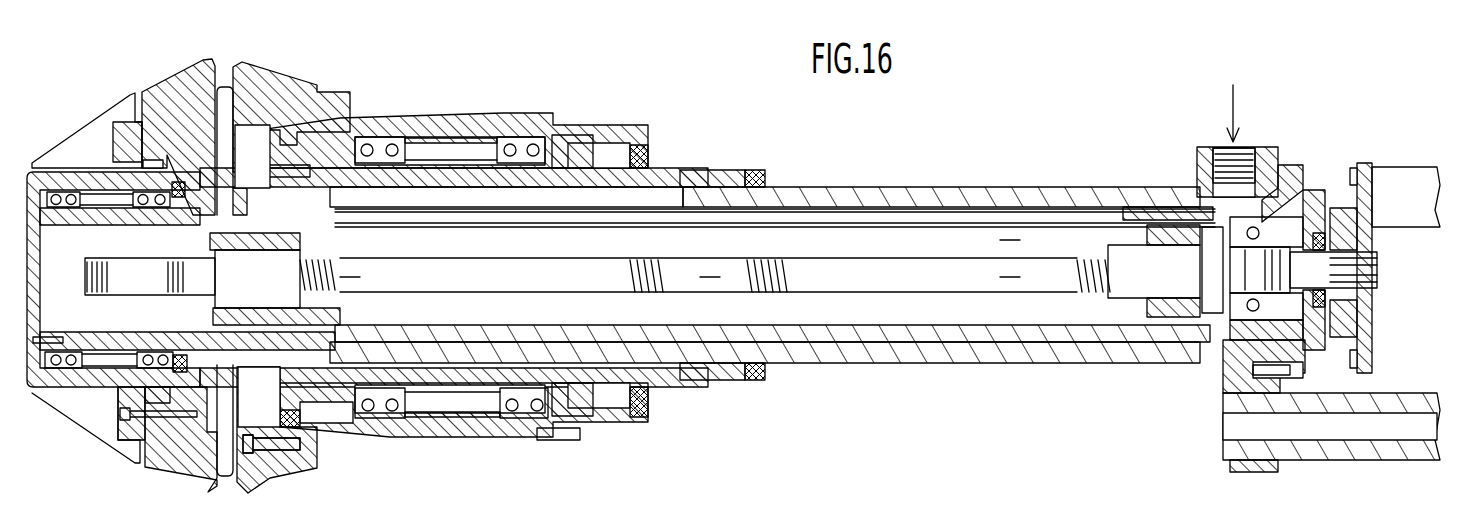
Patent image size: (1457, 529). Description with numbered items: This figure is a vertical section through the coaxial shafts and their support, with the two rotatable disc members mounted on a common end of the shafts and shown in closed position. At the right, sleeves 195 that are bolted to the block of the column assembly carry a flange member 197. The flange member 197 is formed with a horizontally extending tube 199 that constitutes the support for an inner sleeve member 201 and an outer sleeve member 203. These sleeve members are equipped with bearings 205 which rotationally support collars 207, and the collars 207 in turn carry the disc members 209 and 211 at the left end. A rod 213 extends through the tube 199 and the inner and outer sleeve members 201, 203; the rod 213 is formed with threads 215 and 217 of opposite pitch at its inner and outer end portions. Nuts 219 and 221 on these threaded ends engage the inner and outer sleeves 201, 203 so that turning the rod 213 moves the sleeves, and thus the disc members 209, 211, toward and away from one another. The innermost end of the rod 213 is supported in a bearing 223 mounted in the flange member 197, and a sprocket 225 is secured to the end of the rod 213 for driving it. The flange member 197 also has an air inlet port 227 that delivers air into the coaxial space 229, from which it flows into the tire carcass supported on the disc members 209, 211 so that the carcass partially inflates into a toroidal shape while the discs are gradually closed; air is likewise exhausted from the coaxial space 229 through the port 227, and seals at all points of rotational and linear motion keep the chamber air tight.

The sleeves 195 is at (1400, 215).
The flange member 197 is at (1245, 470).
The tube 199 is at (905, 190).
The inner sleeve member 201 is at (960, 210).
The outer sleeve member 203 is at (680, 170).
The bearings 205 is at (105, 200).
The collars 207 is at (325, 102).
The disc member 209 is at (258, 85).
The disc member 211 is at (163, 93).
The rod 213 is at (725, 290).
The threads 215 is at (1090, 283).
The threads 217 is at (480, 288).
The nut 219 is at (1130, 262).
The nut 221 is at (325, 296).
The bearing 223 is at (1290, 178).
The sprocket 225 is at (1352, 185).
The air inlet port 227 is at (1222, 152).
The coaxial space 229 is at (1012, 237).